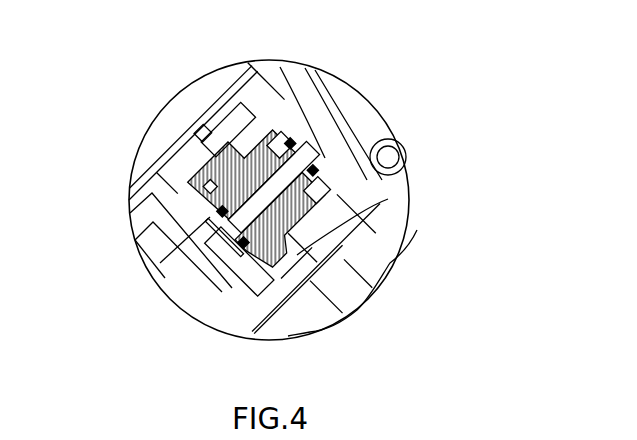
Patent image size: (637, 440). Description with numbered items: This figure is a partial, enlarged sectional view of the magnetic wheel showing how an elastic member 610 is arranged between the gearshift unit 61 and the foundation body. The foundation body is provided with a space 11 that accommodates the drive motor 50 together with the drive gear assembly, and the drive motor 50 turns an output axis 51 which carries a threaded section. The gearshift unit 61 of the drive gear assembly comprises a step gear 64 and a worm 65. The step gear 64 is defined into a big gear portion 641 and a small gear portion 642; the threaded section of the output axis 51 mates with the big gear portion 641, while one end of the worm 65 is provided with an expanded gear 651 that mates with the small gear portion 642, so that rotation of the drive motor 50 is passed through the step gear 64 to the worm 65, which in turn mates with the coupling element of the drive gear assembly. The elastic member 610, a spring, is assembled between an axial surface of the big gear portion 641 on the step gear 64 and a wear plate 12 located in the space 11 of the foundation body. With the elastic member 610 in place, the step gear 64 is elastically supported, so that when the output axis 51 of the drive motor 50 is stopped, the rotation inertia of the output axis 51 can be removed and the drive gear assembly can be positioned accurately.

The space 11 is at (253, 115).
The drive motor 50 is at (162, 165).
The output axis 51 is at (157, 163).
The wear plate 12 is at (223, 233).
The elastic member 610 is at (160, 263).
The small gear portion 642 is at (83, 187).
The big gear portion 641 is at (298, 273).
The step gear 64 is at (488, 180).
The expanded gear 651 is at (378, 274).
The worm 65 is at (303, 328).
The gearshift unit 61 is at (533, 208).